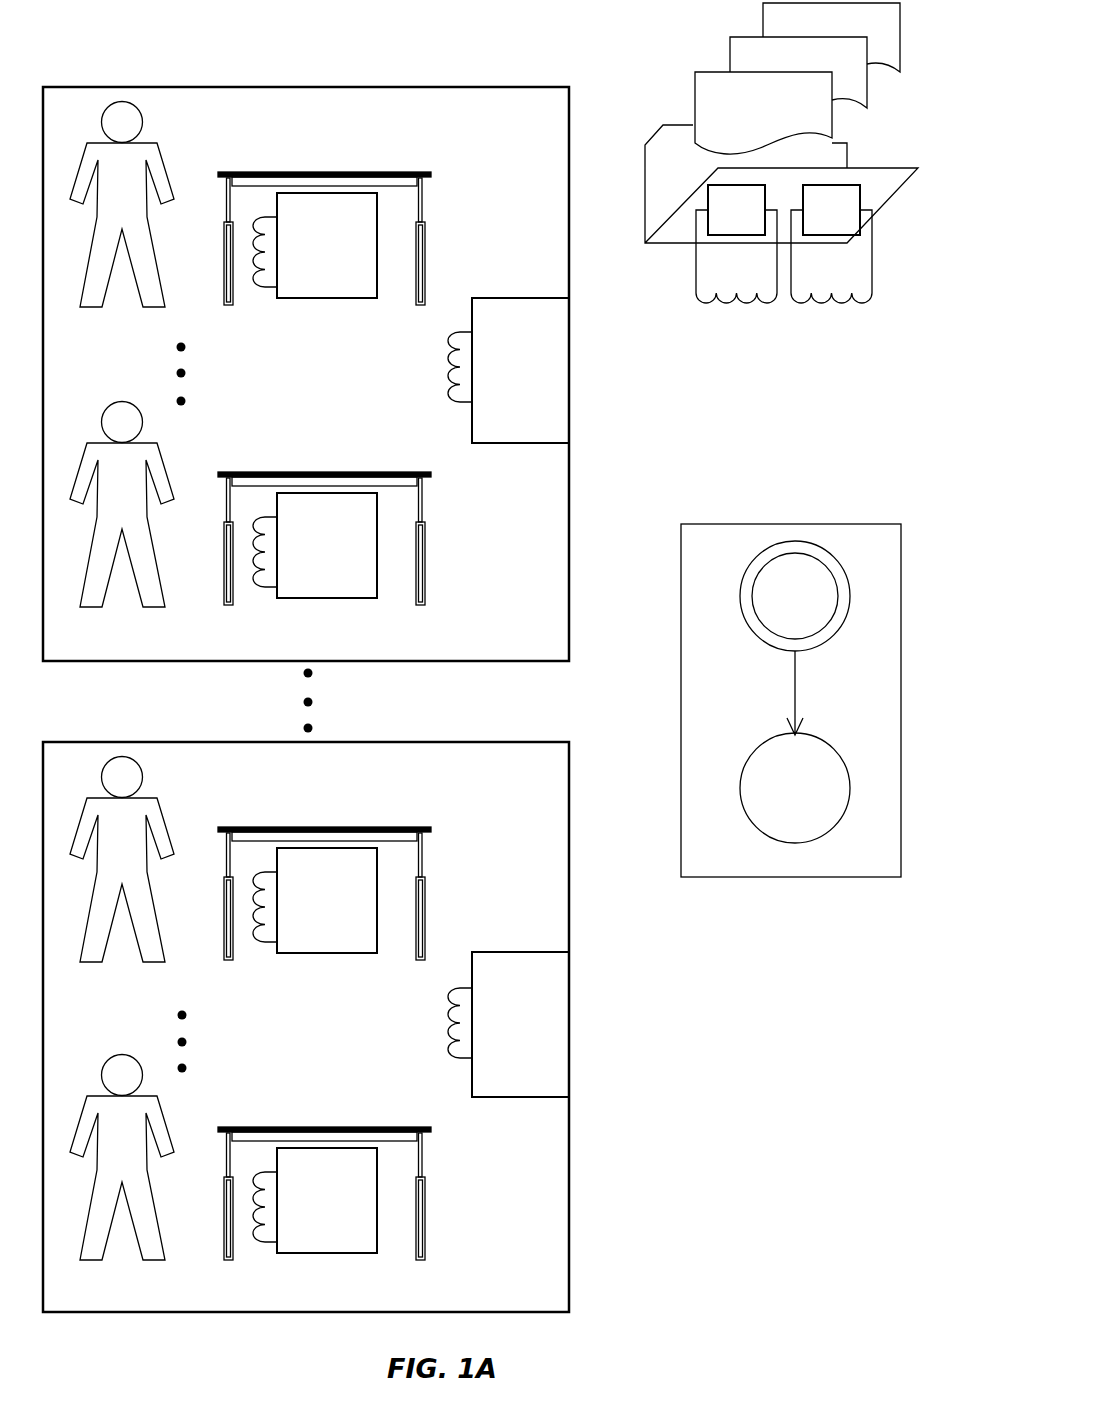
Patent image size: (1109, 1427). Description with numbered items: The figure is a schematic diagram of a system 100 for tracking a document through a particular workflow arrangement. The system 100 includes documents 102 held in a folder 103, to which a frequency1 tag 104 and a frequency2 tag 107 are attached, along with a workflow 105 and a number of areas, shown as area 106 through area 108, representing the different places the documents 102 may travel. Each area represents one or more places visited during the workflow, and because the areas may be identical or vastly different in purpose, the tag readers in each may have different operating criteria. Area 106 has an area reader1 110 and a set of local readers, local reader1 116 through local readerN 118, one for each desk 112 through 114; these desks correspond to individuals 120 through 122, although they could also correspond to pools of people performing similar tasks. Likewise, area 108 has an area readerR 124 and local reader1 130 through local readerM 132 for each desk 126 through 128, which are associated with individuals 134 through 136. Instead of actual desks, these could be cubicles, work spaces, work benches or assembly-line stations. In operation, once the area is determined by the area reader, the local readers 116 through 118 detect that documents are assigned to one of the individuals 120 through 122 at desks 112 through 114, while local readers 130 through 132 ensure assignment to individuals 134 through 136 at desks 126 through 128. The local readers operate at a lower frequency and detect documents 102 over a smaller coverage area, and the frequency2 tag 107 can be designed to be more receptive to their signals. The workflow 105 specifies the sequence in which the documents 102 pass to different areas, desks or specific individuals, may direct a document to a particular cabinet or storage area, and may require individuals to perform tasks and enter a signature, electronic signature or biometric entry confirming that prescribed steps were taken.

The system 100 is at (668, 1247).
The documents 102 is at (693, 108).
The folder 103 is at (687, 243).
The frequency1 tag 104 is at (728, 307).
The workflow 105 is at (793, 877).
The area 106 is at (265, 87).
The frequency2 tag 107 is at (838, 307).
The area 108 is at (250, 742).
The area reader1 110 is at (452, 387).
The desk 112 is at (322, 172).
The desk 114 is at (328, 472).
The local reader1 116 is at (327, 298).
The local readerN 118 is at (327, 598).
The individual 120 is at (122, 219).
The individual 122 is at (122, 519).
The area readerR 124 is at (453, 1040).
The desk 126 is at (330, 827).
The desk 128 is at (328, 1127).
The local reader1 130 is at (327, 953).
The local readerM 132 is at (327, 1251).
The individual 134 is at (122, 874).
The individual 136 is at (122, 1172).